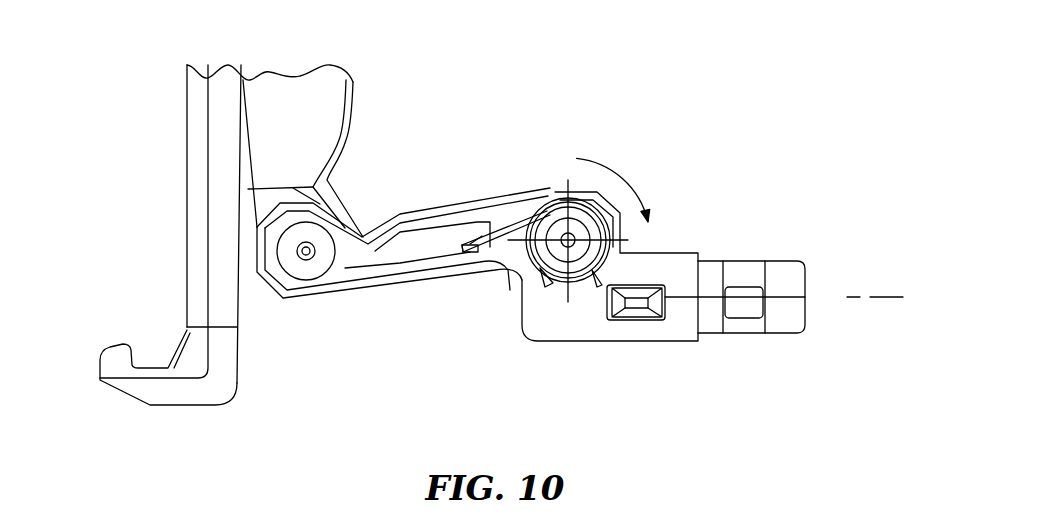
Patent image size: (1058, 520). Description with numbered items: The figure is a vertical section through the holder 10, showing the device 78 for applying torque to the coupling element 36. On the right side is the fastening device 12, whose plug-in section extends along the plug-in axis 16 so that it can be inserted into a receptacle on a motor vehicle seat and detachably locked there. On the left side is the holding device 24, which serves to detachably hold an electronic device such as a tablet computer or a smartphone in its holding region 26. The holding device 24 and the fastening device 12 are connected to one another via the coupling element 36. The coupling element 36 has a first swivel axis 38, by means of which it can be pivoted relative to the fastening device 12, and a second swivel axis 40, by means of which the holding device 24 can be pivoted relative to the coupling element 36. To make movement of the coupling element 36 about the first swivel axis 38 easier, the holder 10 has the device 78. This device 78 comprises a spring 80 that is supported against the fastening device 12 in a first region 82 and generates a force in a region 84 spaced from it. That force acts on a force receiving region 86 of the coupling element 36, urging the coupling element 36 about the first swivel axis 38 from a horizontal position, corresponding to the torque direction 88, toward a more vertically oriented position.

The holder 10 is at (623, 111).
The fastening device 12 is at (764, 235).
The plug-in axis 16 is at (884, 295).
The holding device 24 is at (150, 188).
The holding region 26 is at (104, 275).
The coupling element 36 is at (415, 305).
The first swivel axis 38 is at (557, 228).
The second swivel axis 40 is at (306, 260).
The device 78 is at (512, 293).
The spring 80 is at (517, 222).
The first region 82 is at (523, 297).
The region 84 is at (471, 266).
The force receiving region 86 is at (478, 232).
The torque direction 88 is at (623, 179).